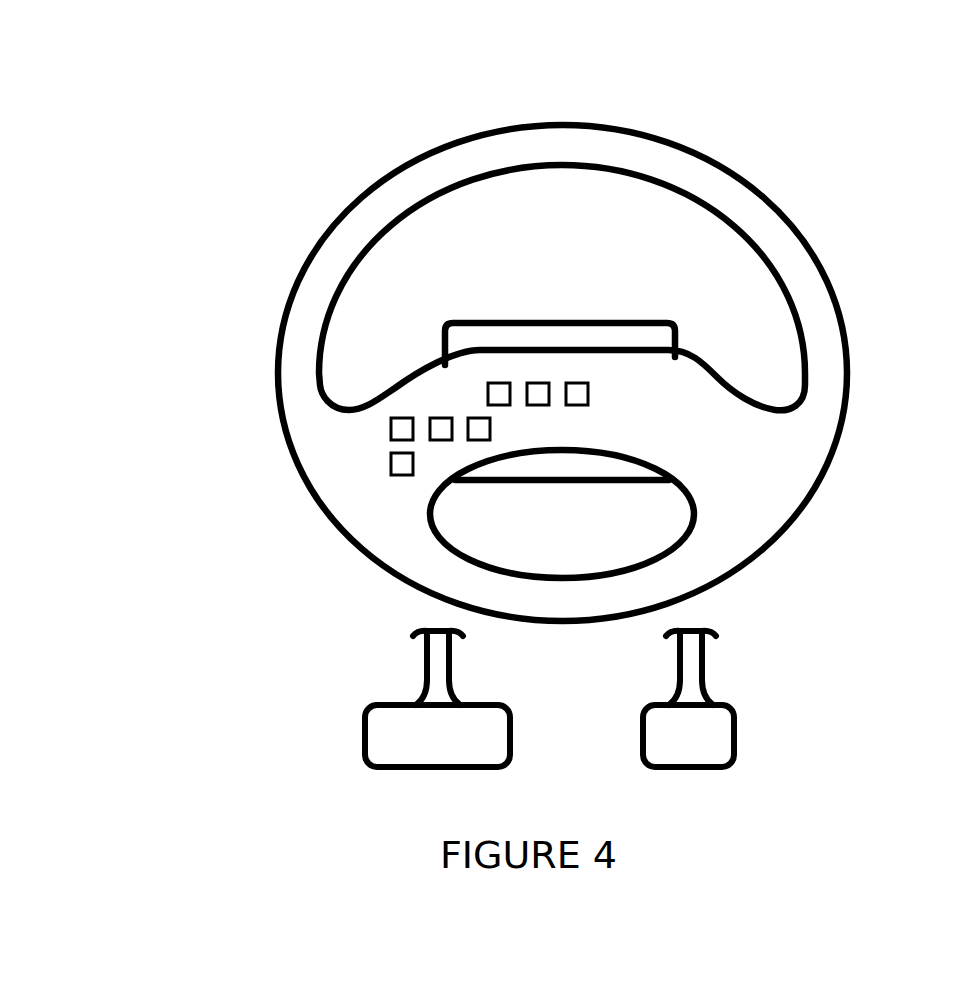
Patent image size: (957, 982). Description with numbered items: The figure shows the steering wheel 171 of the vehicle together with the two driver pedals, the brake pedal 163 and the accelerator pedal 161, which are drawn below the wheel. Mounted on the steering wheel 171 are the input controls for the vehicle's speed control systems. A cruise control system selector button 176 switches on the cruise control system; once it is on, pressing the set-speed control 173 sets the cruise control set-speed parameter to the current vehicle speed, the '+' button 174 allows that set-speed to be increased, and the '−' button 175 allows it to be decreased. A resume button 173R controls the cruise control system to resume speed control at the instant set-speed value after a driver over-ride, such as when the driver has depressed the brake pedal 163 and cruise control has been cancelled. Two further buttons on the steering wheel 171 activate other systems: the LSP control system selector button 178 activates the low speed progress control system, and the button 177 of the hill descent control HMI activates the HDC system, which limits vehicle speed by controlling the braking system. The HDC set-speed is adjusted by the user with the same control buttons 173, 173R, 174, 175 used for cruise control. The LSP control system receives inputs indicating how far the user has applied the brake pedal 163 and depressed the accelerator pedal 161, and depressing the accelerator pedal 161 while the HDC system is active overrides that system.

The steering wheel 171 is at (820, 322).
The set-speed control 173 is at (430, 420).
The resume button 173R is at (478, 440).
The '+' button 174 is at (390, 421).
The '−' button 175 is at (390, 468).
The cruise control system selector button 176 is at (503, 382).
The HDC system button 177 is at (537, 382).
The LSP control system selector button 178 is at (580, 382).
The brake pedal 163 is at (378, 728).
The accelerator pedal 161 is at (717, 730).